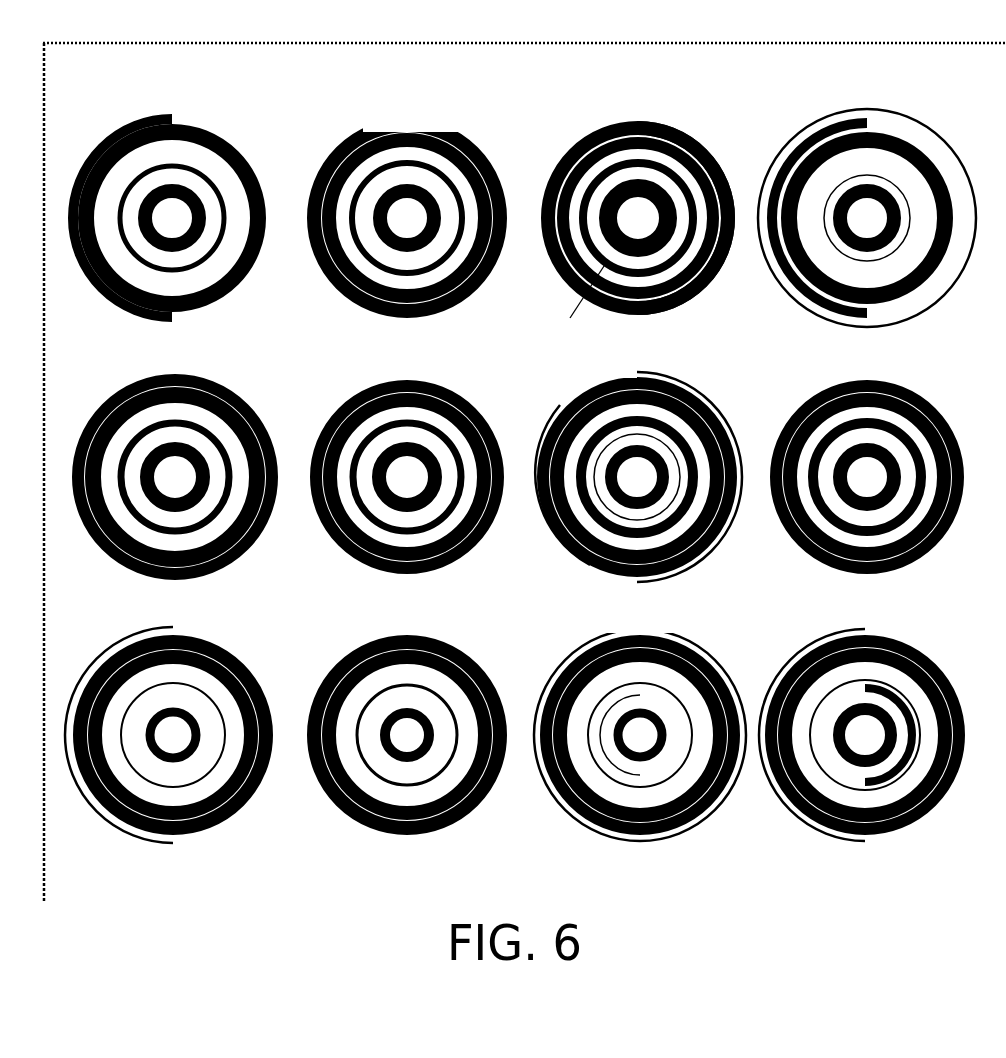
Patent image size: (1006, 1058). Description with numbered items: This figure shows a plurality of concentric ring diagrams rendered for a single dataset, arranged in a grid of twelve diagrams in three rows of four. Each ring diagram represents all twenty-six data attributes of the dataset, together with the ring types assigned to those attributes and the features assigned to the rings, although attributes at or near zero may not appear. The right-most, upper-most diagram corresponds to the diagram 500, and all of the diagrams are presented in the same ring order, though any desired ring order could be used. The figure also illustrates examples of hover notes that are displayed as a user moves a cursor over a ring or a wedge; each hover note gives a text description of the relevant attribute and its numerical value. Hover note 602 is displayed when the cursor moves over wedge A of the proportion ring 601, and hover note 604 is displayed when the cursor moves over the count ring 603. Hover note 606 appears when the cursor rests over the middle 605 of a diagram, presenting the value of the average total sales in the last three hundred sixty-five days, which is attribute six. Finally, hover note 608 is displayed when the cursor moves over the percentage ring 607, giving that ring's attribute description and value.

The diagram 500 is at (524, 473).
The proportion ring 601 is at (607, 262).
The hover note 602 is at (625, 373).
The count ring 603 is at (626, 212).
The hover note 604 is at (567, 126).
The middle 605 is at (644, 216).
The hover note 606 is at (852, 103).
The percentage ring 607 is at (784, 663).
The hover note 608 is at (800, 628).